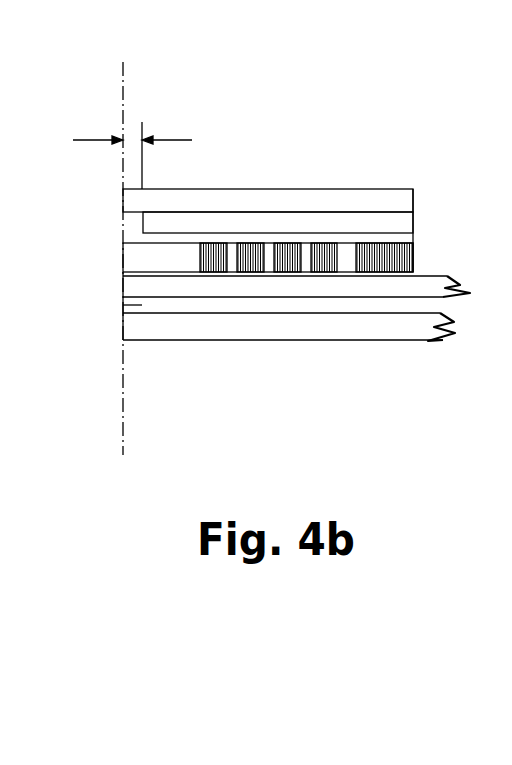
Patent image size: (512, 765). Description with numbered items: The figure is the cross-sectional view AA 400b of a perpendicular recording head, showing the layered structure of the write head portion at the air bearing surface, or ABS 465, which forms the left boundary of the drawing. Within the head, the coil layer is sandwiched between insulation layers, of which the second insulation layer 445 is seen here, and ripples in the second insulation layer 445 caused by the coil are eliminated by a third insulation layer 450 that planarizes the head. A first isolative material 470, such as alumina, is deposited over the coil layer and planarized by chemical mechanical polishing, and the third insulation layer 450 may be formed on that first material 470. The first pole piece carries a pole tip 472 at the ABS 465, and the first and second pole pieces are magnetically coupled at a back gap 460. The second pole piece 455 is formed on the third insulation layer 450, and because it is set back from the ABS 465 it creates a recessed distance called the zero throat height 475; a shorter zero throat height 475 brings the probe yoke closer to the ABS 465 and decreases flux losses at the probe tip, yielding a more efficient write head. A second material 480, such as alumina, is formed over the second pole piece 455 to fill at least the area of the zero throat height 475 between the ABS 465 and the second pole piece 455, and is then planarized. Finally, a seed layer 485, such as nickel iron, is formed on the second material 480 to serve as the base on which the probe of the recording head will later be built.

The cross-sectional view AA 400b is at (364, 92).
The second insulation layer 445 is at (356, 244).
The third insulation layer 450 is at (123, 242).
The second pole piece layer 455 is at (413, 222).
The back gap 460 is at (413, 263).
The ABS 465 is at (123, 435).
The first isolative material 470 is at (123, 260).
The pole tip 472 is at (122, 289).
The zero throat height 475 is at (82, 138).
The second material 480 is at (132, 229).
The seed layer 485 is at (123, 211).